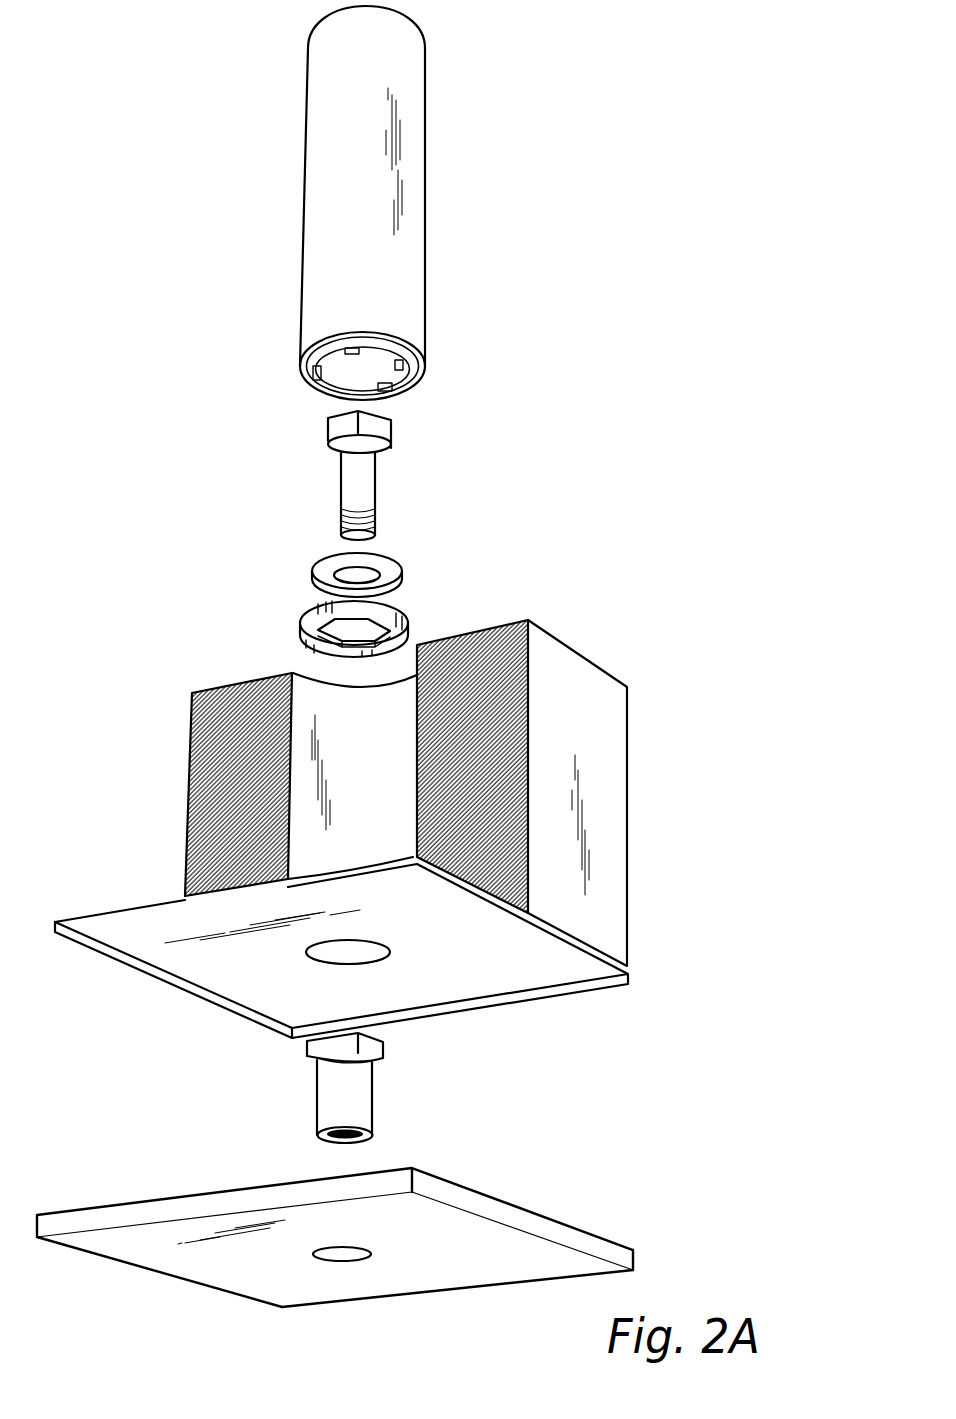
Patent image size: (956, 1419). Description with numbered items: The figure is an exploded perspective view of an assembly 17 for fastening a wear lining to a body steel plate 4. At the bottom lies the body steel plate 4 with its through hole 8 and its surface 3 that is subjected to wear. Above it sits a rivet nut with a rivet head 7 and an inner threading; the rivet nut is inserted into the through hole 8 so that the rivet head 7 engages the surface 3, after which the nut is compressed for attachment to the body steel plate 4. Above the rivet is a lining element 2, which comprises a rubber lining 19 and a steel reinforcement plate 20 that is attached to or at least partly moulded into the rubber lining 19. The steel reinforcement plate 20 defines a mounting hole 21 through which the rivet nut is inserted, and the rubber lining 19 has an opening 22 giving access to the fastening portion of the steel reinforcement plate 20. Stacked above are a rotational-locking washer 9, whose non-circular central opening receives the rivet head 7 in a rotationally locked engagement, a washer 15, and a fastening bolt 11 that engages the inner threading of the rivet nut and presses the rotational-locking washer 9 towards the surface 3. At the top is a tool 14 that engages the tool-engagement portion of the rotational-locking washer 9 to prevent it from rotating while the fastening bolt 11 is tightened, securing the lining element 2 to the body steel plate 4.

The lining element 2 is at (627, 624).
The surface 3 is at (335, 1232).
The body steel plate 4 is at (567, 1239).
The rivet head 7 is at (357, 1095).
The through hole 8 is at (342, 1256).
The rotational-locking washer 9 is at (401, 634).
The fastening bolt 11 is at (358, 480).
The tool 14 is at (405, 147).
The flat washer 15 is at (388, 560).
The assembly 17 is at (658, 201).
The rubber lining 19 is at (603, 812).
The steel reinforcement plate 20 is at (341, 979).
The mounting hole 21 is at (340, 947).
The opening 22 is at (340, 765).